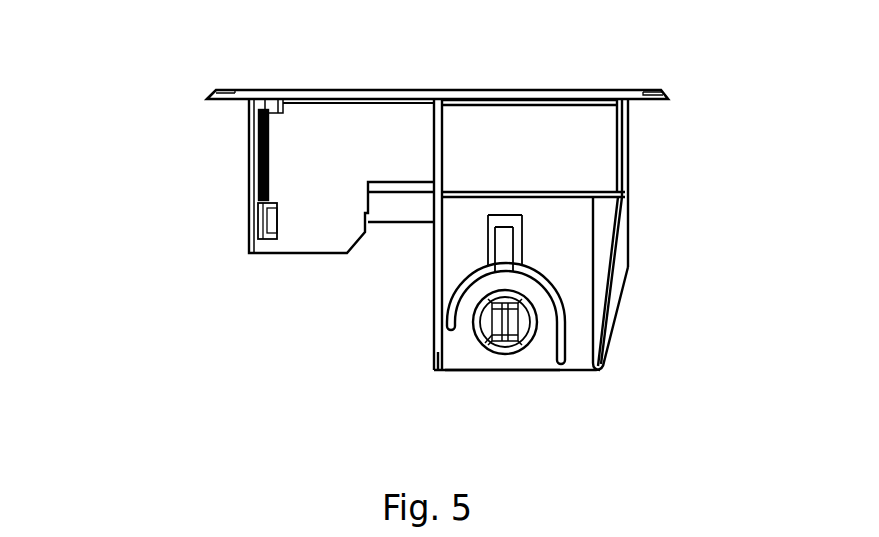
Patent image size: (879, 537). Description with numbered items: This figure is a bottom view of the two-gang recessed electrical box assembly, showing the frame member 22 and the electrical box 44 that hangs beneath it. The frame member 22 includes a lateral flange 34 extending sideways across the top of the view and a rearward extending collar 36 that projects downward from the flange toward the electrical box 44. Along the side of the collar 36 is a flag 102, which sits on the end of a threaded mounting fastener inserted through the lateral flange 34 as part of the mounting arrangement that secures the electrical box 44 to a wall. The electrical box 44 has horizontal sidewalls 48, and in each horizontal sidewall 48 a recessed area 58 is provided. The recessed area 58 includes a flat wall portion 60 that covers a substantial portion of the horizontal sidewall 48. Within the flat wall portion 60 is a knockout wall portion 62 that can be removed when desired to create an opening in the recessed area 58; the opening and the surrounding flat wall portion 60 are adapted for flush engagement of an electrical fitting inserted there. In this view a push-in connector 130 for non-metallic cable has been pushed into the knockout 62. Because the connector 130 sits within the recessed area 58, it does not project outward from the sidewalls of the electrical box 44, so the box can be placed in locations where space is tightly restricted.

The frame member 22 is at (135, 123).
The lateral flange 34 is at (662, 91).
The flag 102 is at (252, 224).
The electrical box 44 is at (432, 282).
The collar 36 is at (518, 150).
The horizontal sidewall 48 is at (570, 241).
The knockout wall portion 62 is at (534, 294).
The push-in connector 130 is at (528, 322).
The flat wall portion 60 is at (465, 357).
The recessed area 58 is at (517, 373).